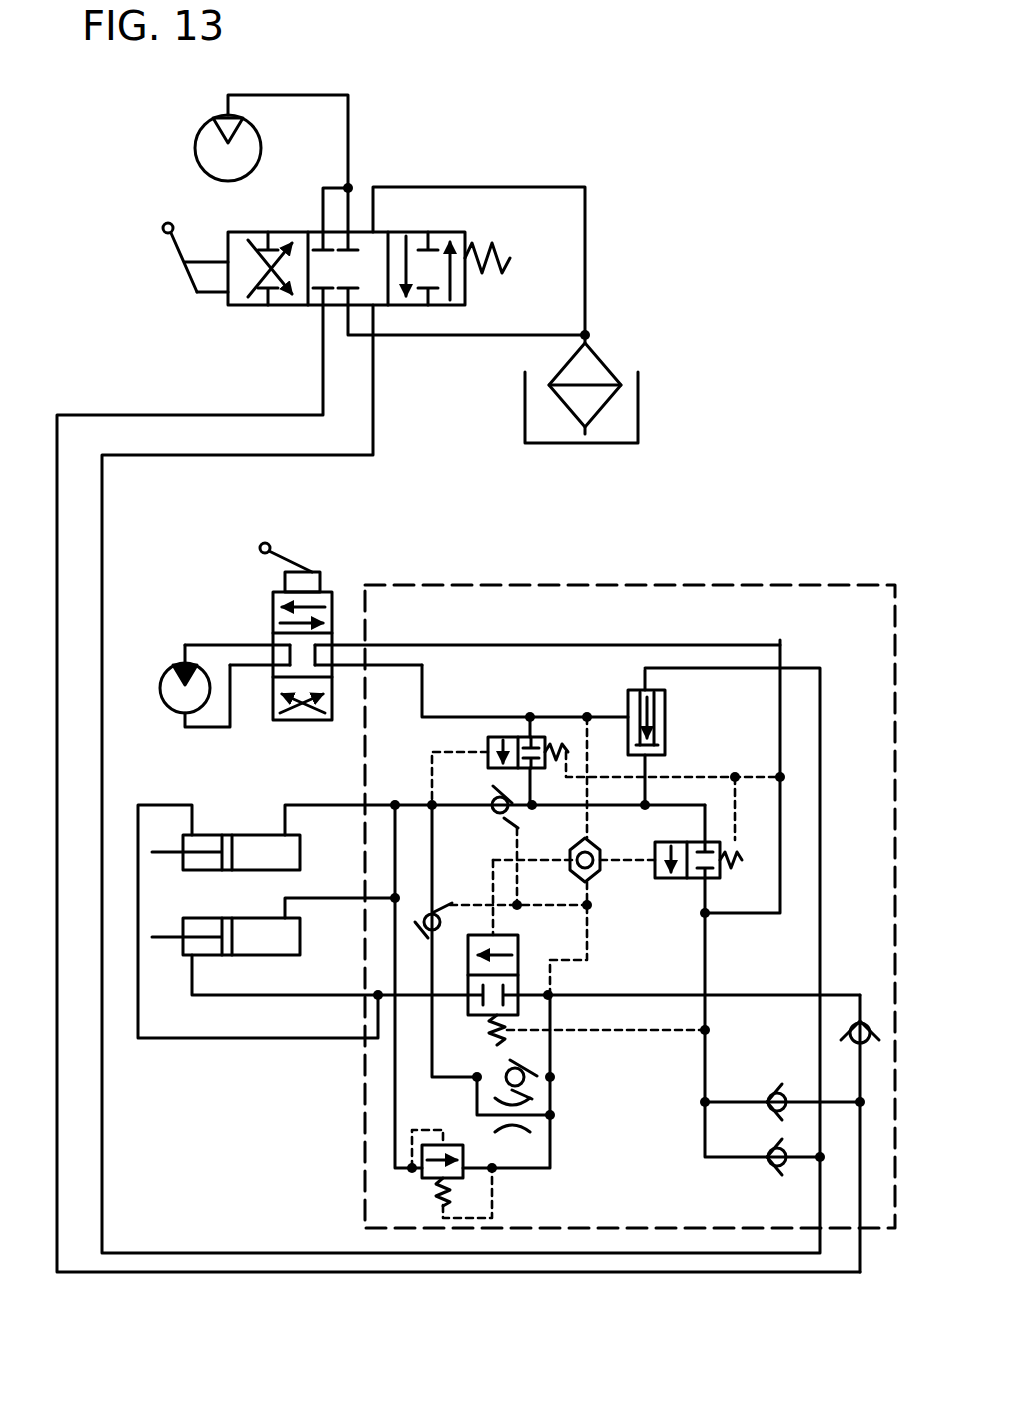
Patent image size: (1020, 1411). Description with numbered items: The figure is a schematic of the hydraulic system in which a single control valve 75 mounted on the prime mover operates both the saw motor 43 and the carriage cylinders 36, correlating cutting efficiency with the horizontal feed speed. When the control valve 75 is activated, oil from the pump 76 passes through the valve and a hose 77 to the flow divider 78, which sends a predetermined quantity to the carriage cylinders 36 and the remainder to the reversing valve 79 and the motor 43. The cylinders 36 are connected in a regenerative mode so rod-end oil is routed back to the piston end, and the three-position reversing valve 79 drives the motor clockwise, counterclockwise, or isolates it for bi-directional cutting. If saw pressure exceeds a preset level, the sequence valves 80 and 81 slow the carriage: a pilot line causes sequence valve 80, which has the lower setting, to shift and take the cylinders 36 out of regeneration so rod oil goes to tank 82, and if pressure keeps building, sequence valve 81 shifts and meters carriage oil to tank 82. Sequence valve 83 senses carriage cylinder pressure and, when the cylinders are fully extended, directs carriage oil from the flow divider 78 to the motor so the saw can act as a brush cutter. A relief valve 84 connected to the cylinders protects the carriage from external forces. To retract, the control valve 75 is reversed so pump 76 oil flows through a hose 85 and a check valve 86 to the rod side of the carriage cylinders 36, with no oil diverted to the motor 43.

The carriage cylinders 36 is at (258, 835).
The saw motor 43 is at (160, 674).
The control valve 75 is at (258, 306).
The pump 76 is at (194, 150).
The hose 77 is at (290, 1250).
The flow divider 78 is at (673, 715).
The reversing valve 79 is at (273, 615).
The sequence valve 80 is at (518, 943).
The sequence valve 81 is at (665, 880).
The tank 82 is at (603, 365).
The sequence valve 83 is at (492, 735).
The relief valve 84 is at (460, 1180).
The hose 85 is at (258, 1274).
The check valve 86 is at (545, 1092).